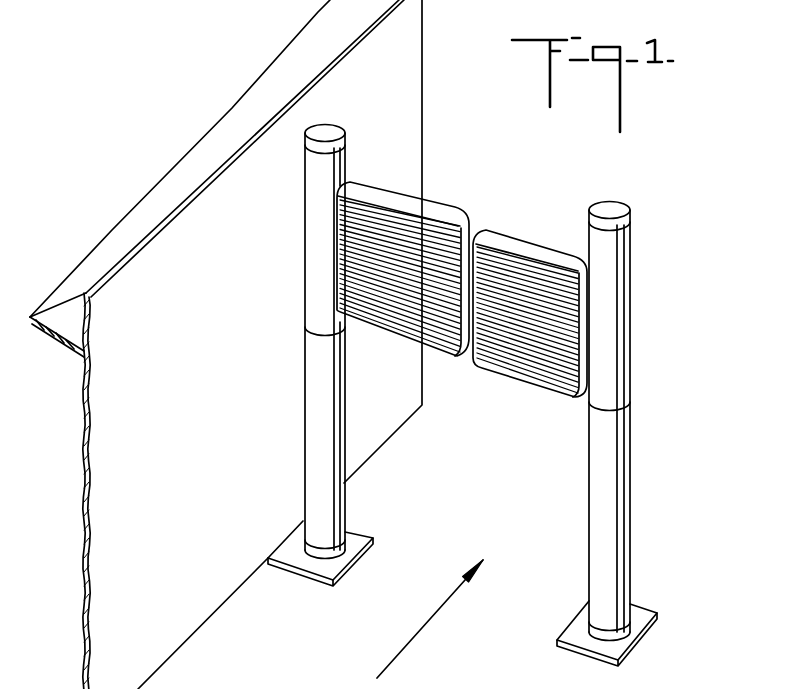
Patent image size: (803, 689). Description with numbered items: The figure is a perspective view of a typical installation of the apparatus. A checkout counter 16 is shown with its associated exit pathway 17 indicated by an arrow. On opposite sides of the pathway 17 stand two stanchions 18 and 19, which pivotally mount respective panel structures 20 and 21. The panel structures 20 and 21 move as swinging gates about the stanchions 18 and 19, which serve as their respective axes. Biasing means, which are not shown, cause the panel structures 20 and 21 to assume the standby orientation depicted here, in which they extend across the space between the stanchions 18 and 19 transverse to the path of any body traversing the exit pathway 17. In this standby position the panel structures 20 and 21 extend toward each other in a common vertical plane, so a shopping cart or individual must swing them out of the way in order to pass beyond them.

The checkout counter 16 is at (218, 122).
The exit pathway 17 is at (422, 622).
The stanchion 18 is at (323, 128).
The stanchion 19 is at (618, 210).
The panel structure 20 is at (430, 203).
The panel structure 21 is at (515, 230).